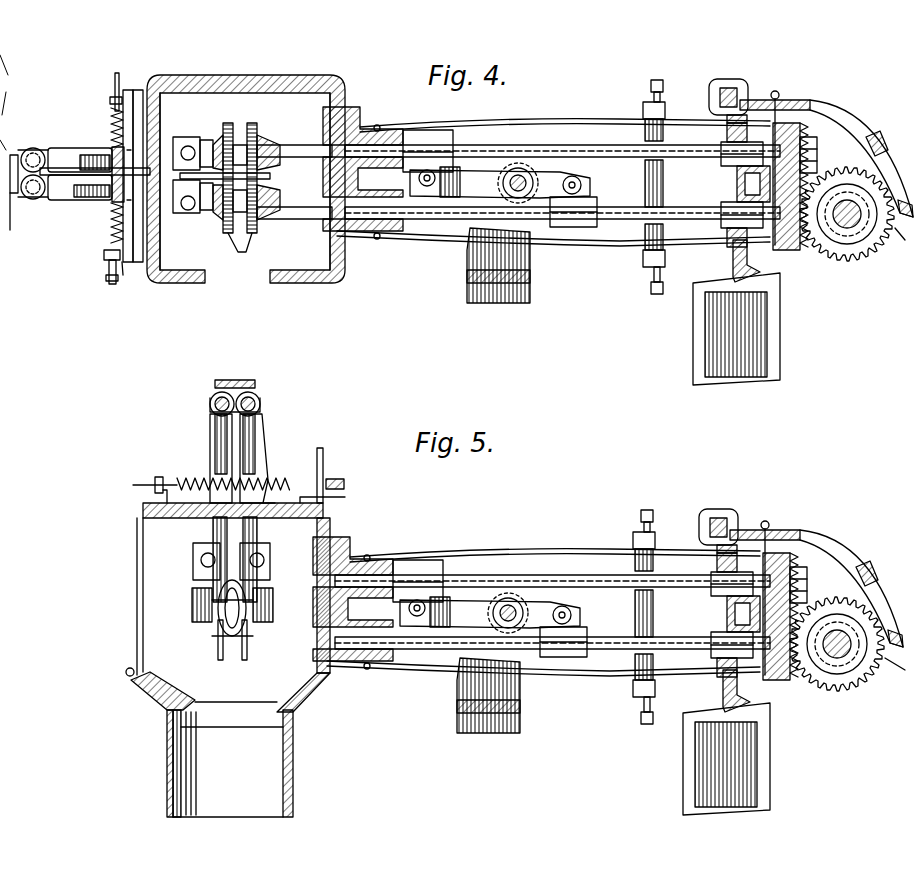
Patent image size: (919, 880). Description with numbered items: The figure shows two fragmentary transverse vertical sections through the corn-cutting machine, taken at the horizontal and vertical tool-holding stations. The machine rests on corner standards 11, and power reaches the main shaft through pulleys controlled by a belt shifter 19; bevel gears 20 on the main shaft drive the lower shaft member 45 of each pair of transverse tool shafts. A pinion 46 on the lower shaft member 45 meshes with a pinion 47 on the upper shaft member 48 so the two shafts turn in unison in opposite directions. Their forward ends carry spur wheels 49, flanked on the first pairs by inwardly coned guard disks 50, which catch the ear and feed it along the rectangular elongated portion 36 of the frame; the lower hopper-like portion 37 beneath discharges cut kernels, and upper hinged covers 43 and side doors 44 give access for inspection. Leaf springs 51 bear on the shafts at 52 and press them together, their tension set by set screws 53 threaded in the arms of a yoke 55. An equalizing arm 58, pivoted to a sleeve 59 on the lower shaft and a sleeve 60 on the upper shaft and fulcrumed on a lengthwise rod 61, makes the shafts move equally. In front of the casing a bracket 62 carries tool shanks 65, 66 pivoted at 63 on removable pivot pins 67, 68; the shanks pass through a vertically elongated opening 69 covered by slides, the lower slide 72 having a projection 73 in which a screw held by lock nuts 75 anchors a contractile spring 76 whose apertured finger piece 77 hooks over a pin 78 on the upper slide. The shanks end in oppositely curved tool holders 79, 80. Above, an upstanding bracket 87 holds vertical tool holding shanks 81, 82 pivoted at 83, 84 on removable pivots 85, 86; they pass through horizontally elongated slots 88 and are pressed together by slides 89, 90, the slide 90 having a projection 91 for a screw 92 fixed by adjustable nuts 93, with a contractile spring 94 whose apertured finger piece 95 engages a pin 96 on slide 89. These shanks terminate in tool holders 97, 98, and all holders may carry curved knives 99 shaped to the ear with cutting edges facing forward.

In FIG. 4, the corner standards 11 is at (623, 306).
In FIG. 5, the corner standards 11 is at (630, 736).
In FIG. 4, the belt shifter 19 is at (735, 79).
In FIG. 5, the belt shifter 19 is at (793, 599).
In FIG. 4, the bevel gears 20 is at (907, 239).
In FIG. 5, the bevel gears 20 is at (902, 669).
In FIG. 4, the rectangular elongated portion 36 is at (140, 90).
In FIG. 5, the lower hopper-like portion 37 is at (293, 762).
In FIG. 4, the upper hinged covers 43 is at (245, 76).
In FIG. 5, the side doors 44 is at (137, 596).
In FIG. 4, the lower shaft member 45 is at (619, 207).
In FIG. 5, the lower shaft member 45 is at (552, 627).
In FIG. 4, the pinion 46 is at (805, 250).
In FIG. 5, the pinion 46 is at (833, 656).
In FIG. 4, the pinion 47 is at (812, 106).
In FIG. 5, the pinion 47 is at (816, 590).
In FIG. 4, the upper shaft member 48 is at (604, 146).
In FIG. 5, the upper shaft member 48 is at (552, 554).
In FIG. 4, the spur wheels 49 is at (240, 123).
In FIG. 4, the inwardly coned guard disks 50 is at (215, 145).
In FIG. 4, the leaf springs 51 is at (568, 122).
In FIG. 5, the leaf springs 51 is at (543, 612).
In FIG. 4, the bearing point 52 is at (377, 125).
In FIG. 5, the bearing point 52 is at (353, 603).
In FIG. 4, the set screws 53 is at (656, 80).
In FIG. 5, the set screws 53 is at (642, 606).
In FIG. 4, the yoke 55 is at (727, 183).
In FIG. 5, the yoke 55 is at (737, 616).
In FIG. 4, the equalizing arm 58 is at (464, 182).
In FIG. 5, the equalizing arm 58 is at (458, 612).
In FIG. 4, the sleeve 59 is at (575, 228).
In FIG. 5, the sleeve 59 is at (612, 606).
In FIG. 4, the sleeve 60 is at (450, 130).
In FIG. 5, the sleeve 60 is at (421, 561).
In FIG. 4, the rod 61 is at (522, 168).
In FIG. 5, the rod 61 is at (490, 592).
In FIG. 4, the bracket 62 is at (108, 145).
In FIG. 4, the pivot point 63 is at (36, 146).
In FIG. 4, the tool shank 65 is at (75, 150).
In FIG. 4, the tool shank 66 is at (62, 200).
In FIG. 4, the pivot pin 67 is at (22, 152).
In FIG. 4, the pivot pin 68 is at (22, 196).
In FIG. 4, the opening 69 is at (9, 221).
In FIG. 4, the lower slide 72 is at (104, 255).
In FIG. 4, the projection 73 is at (124, 270).
In FIG. 4, the lock nuts 75 is at (106, 278).
In FIG. 4, the contractile spring 76 is at (108, 210).
In FIG. 4, the apertured finger piece 77 is at (115, 78).
In FIG. 4, the pin 78 is at (110, 100).
In FIG. 4, the tool holder 79 is at (285, 157).
In FIG. 4, the tool holder 80 is at (285, 207).
In FIG. 5, the tool holding shank 81 is at (212, 445).
In FIG. 5, the tool holding shank 82 is at (262, 450).
In FIG. 5, the pivot point 83 is at (215, 393).
In FIG. 5, the pivot point 84 is at (262, 400).
In FIG. 5, the removable pivot 85 is at (209, 408).
In FIG. 5, the removable pivot 86 is at (262, 392).
In FIG. 5, the upstanding bracket 87 is at (268, 480).
In FIG. 5, the slots 88 is at (193, 545).
In FIG. 5, the slide 89 is at (143, 510).
In FIG. 5, the slide 90 is at (323, 512).
In FIG. 5, the projection 91 is at (345, 497).
In FIG. 5, the screw 92 is at (344, 482).
In FIG. 5, the adjustable nuts 93 is at (321, 462).
In FIG. 5, the contractile spring 94 is at (190, 478).
In FIG. 5, the apertured finger piece 95 is at (155, 482).
In FIG. 5, the pin 96 is at (133, 485).
In FIG. 5, the tool holder 97 is at (192, 605).
In FIG. 5, the tool holder 98 is at (273, 605).
In FIG. 4, the curved knives 99 is at (155, 177).
In FIG. 5, the curved knives 99 is at (222, 625).